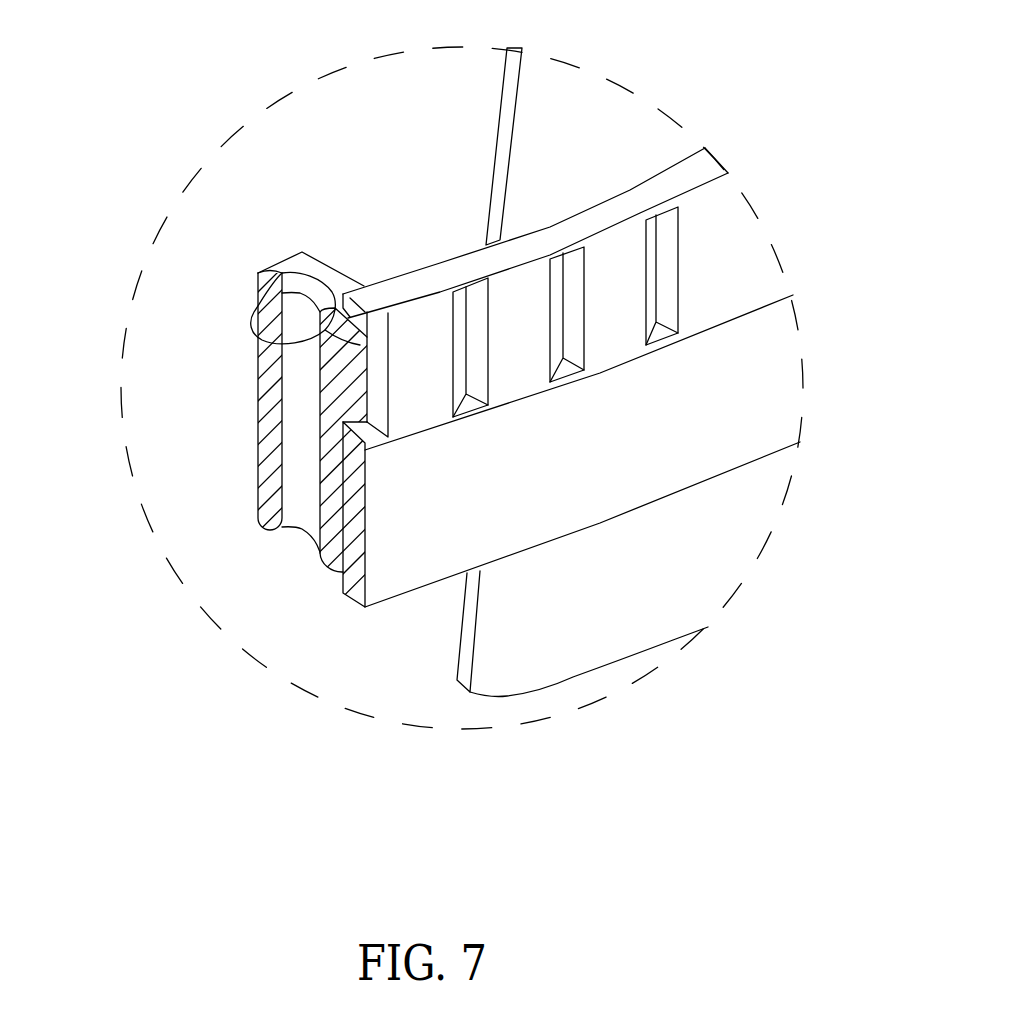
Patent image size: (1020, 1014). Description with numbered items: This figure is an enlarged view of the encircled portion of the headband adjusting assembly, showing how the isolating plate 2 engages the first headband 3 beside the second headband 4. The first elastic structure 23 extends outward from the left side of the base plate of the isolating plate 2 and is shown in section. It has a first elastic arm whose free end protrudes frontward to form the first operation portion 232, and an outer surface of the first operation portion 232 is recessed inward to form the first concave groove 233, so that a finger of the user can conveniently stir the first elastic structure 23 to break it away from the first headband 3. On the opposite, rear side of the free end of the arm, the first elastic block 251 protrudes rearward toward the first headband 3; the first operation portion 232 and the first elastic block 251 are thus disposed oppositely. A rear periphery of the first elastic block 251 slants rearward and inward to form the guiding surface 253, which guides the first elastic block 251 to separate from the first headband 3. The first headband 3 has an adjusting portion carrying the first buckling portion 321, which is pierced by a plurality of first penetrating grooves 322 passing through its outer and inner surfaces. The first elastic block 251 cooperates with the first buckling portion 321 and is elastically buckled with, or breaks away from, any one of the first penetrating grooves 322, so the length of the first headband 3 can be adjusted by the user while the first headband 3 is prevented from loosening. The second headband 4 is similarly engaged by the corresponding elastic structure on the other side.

The isolating plate 2 is at (607, 110).
The first headband 3 is at (743, 252).
The second headband 4 is at (777, 392).
The first elastic structure 23 is at (211, 476).
The first operation portion 232 is at (275, 450).
The first concave groove 233 is at (303, 517).
The first elastic block 251 is at (335, 412).
The guiding surface 253 is at (252, 316).
The first buckling portion 321 is at (457, 247).
The first penetrating grooves 322 is at (378, 332).